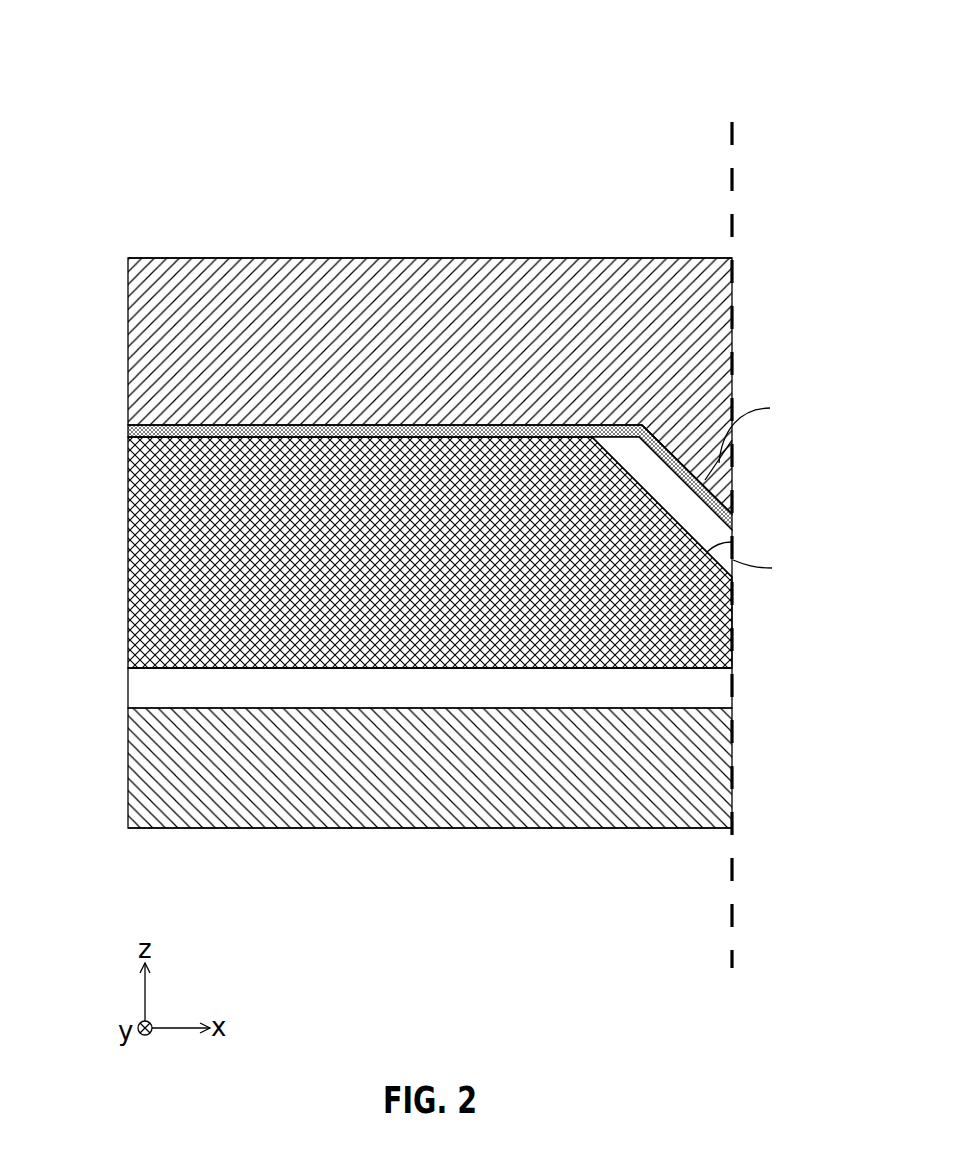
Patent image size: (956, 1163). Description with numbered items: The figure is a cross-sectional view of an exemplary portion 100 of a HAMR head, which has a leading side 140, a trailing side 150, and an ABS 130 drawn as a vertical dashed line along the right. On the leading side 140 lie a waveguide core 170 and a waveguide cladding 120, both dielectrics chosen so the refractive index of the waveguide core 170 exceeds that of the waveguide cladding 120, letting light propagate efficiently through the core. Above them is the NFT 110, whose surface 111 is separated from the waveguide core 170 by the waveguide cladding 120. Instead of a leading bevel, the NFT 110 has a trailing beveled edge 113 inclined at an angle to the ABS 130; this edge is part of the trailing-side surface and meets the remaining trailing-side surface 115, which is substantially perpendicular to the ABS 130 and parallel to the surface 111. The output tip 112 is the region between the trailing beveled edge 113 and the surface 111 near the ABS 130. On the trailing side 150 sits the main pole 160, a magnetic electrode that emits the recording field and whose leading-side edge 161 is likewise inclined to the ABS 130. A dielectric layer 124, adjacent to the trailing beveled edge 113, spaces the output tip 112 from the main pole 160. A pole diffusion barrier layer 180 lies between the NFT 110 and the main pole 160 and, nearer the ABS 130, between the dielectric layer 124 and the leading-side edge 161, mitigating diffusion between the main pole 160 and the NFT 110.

The exemplary portion of HAMR head 100 is at (278, 75).
The NFT 110 is at (456, 572).
The surface 111 is at (395, 667).
The output tip 112 is at (717, 631).
The trailing beveled edge 113 is at (677, 533).
The remaining trailing-side surface 115 is at (348, 440).
The waveguide cladding 120 is at (473, 704).
The dielectric layer 124 is at (691, 503).
The ABS 130 is at (740, 293).
The leading side 140 is at (555, 870).
The trailing side 150 is at (555, 213).
The main pole 160 is at (463, 359).
The leading-side edge 161 is at (703, 483).
The waveguide core 170 is at (470, 790).
The pole diffusion barrier layer 180 is at (128, 432).